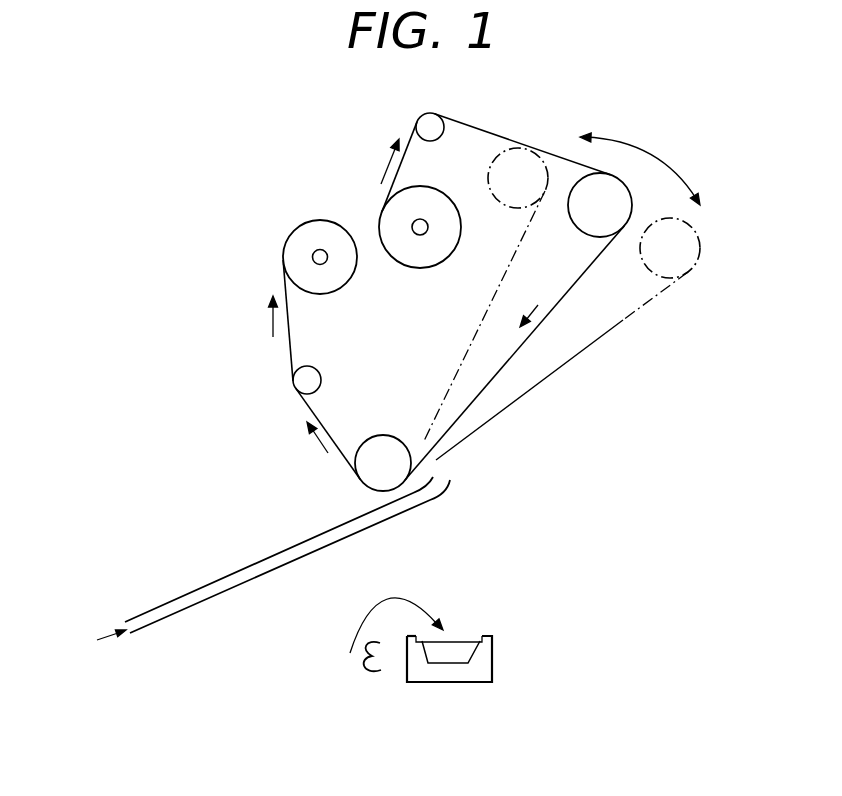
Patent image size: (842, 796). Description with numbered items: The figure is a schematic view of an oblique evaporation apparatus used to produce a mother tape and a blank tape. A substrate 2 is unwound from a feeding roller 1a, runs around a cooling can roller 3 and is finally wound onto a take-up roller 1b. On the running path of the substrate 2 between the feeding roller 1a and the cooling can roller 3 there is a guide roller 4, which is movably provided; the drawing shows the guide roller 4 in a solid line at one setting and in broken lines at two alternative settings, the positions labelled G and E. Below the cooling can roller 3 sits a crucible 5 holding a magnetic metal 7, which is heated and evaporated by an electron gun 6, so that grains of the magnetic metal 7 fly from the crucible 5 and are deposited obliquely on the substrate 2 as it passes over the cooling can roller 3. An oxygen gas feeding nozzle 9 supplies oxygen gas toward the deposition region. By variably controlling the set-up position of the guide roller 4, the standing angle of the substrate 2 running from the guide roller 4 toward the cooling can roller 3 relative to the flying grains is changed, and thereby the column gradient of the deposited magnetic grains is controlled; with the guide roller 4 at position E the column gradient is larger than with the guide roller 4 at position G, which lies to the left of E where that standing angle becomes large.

The feeding roller 1a is at (406, 258).
The take-up roller 1b is at (288, 250).
The substrate 2 is at (587, 277).
The cooling can roller 3 is at (381, 444).
The guide roller 4 is at (516, 154).
The crucible 5 is at (493, 653).
The electron gun 6 is at (362, 671).
The magnetic metal 7 is at (459, 640).
The oxygen gas feeding nozzle 9 is at (243, 570).